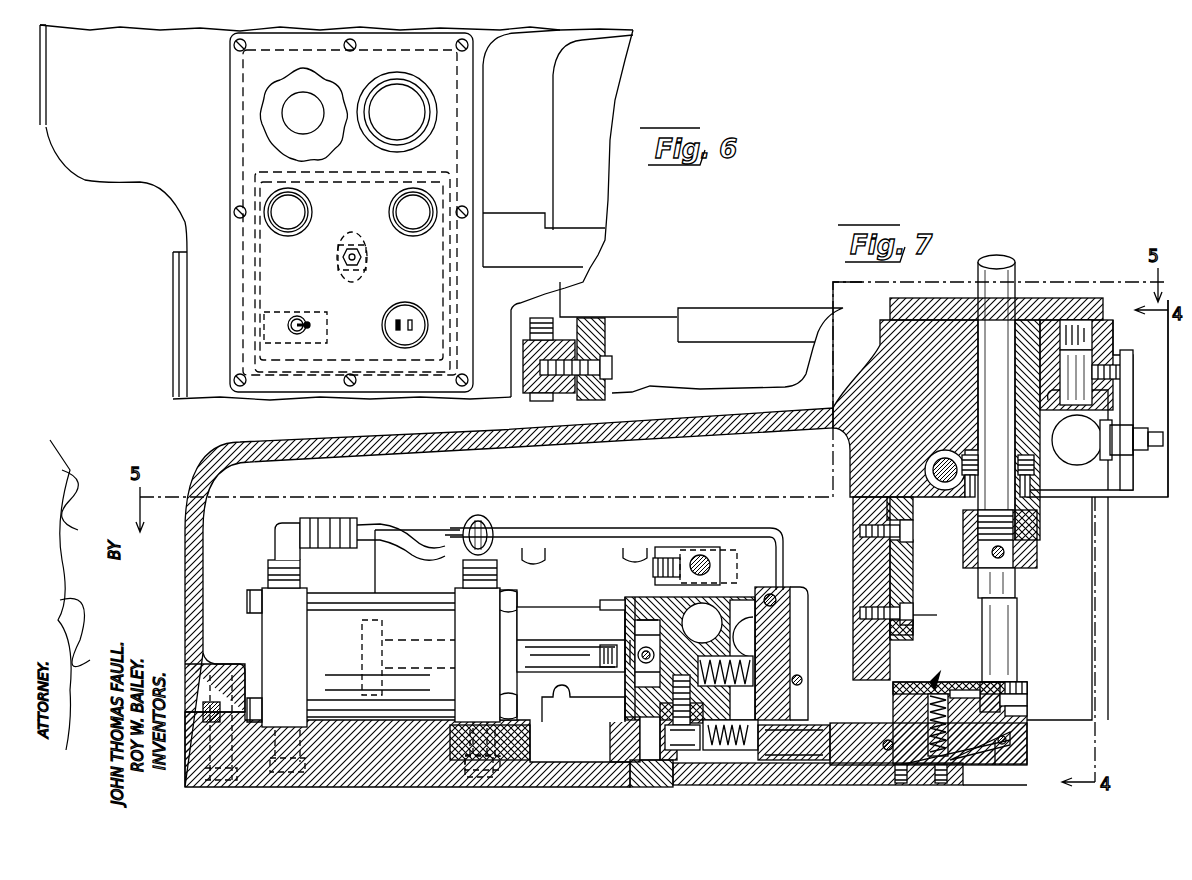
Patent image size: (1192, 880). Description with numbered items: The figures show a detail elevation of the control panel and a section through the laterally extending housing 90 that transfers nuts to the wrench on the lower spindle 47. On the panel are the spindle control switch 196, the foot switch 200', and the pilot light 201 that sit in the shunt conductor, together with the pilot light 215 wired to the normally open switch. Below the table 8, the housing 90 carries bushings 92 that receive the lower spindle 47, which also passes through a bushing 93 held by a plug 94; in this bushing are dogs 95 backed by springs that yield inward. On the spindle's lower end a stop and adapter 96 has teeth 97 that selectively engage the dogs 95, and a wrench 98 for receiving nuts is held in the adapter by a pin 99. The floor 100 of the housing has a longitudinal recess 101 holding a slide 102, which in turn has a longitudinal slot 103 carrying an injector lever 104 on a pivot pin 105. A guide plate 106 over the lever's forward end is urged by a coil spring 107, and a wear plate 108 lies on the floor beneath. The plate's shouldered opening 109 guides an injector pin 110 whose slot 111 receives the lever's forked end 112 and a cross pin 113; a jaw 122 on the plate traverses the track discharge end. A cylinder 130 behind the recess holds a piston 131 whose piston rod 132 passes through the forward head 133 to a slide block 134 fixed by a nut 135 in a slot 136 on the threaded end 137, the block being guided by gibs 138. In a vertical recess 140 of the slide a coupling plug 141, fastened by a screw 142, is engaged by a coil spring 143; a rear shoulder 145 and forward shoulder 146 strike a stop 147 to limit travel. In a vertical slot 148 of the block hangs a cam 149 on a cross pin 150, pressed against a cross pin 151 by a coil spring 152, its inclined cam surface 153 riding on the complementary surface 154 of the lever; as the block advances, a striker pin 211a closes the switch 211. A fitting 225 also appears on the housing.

In FIG. 6, the pilot light 201 is at (280, 225).
In FIG. 6, the pilot light 215 is at (405, 210).
In FIG. 6, the spindle control switch 196 is at (366, 263).
In FIG. 6, the foot switch 200' is at (447, 315).
In FIG. 7, the table 8 is at (735, 318).
In FIG. 7, the lower spindle 47 is at (1003, 292).
In FIG. 7, the housing 90 is at (375, 442).
In FIG. 7, the bushings 92 is at (863, 373).
In FIG. 7, the bushing 93 is at (945, 490).
In FIG. 7, the plug 94 is at (962, 478).
In FIG. 7, the dogs 95 is at (1040, 500).
In FIG. 7, the stop and adapter 96 is at (1038, 548).
In FIG. 7, the teeth 97 is at (1035, 503).
In FIG. 7, the wrench 98 is at (1020, 635).
In FIG. 7, the pin 99 is at (1018, 578).
In FIG. 7, the floor 100 is at (400, 787).
In FIG. 7, the longitudinal recess 101 is at (530, 735).
In FIG. 7, the slide 102 is at (608, 742).
In FIG. 7, the longitudinal slot 103 is at (940, 788).
In FIG. 7, the injector lever 104 is at (838, 784).
In FIG. 7, the pivot pin 105 is at (880, 782).
In FIG. 7, the guide plate 106 is at (976, 688).
In FIG. 7, the coil spring 107 is at (938, 680).
In FIG. 7, the wear plate 108 is at (963, 784).
In FIG. 7, the shouldered opening 109 is at (1030, 712).
In FIG. 7, the injector pin 110 is at (1030, 700).
In FIG. 7, the slot 111 is at (1015, 725).
In FIG. 7, the fork 112 is at (1022, 735).
In FIG. 7, the cross pin 113 is at (1000, 762).
In FIG. 7, the jaw 122 is at (1030, 688).
In FIG. 7, the cylinder 130 is at (320, 615).
In FIG. 7, the piston 131 is at (385, 635).
In FIG. 7, the piston rod 132 is at (530, 652).
In FIG. 7, the forward head 133 is at (462, 600).
In FIG. 7, the slide block 134 is at (628, 614).
In FIG. 7, the nut 135 is at (605, 602).
In FIG. 7, the slot 136 is at (643, 620).
In FIG. 7, the threaded end 137 is at (632, 672).
In FIG. 7, the gibs 138 is at (552, 707).
In FIG. 7, the vertical recess 140 is at (650, 723).
In FIG. 7, the coupling plug 141 is at (700, 750).
In FIG. 7, the screw 142 is at (685, 750).
In FIG. 7, the coil spring 143 is at (732, 720).
In FIG. 7, the rear shoulder 145 is at (642, 787).
In FIG. 7, the forward shoulder 146 is at (740, 760).
In FIG. 7, the stop 147 is at (662, 770).
In FIG. 7, the vertical slot 148 is at (740, 595).
In FIG. 7, the cam 149 is at (785, 632).
In FIG. 7, the cross pin 150 is at (775, 605).
In FIG. 7, the cross pin 151 is at (803, 680).
In FIG. 7, the coil spring 152 is at (792, 665).
In FIG. 7, the inclined cam surface 153 is at (798, 703).
In FIG. 7, the complementary surface 154 is at (772, 760).
In FIG. 7, the switch 211 is at (688, 547).
In FIG. 7, the striker pin 211a is at (705, 558).
In FIG. 7, the fitting 225 is at (1160, 436).